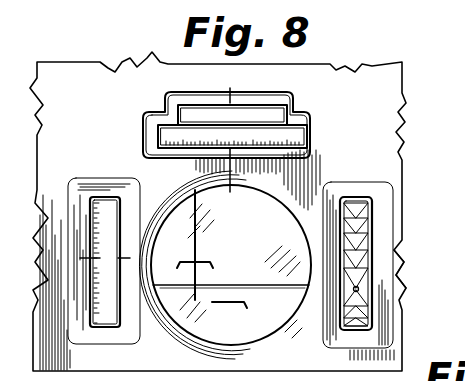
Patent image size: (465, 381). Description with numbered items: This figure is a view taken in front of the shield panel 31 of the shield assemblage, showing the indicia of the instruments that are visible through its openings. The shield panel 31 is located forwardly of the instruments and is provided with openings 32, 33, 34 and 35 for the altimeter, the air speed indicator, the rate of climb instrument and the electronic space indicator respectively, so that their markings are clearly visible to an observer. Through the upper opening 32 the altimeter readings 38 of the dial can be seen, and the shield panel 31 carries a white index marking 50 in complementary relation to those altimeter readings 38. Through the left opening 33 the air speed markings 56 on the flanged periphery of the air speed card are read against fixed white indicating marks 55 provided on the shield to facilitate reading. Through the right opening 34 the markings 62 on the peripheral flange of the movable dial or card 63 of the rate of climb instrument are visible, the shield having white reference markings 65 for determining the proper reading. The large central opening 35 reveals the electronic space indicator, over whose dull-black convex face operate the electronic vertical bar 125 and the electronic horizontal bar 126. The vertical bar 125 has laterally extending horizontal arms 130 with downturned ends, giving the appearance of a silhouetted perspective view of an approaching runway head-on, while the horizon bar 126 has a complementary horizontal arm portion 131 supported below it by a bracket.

The shield panel 31 is at (405, 84).
The opening 32 is at (263, 103).
The altimeter readings 38 is at (258, 133).
The white index marking 50 is at (211, 170).
The opening 35 is at (281, 205).
The electronic vertical bar 125 is at (199, 241).
The electronic horizontal bar 126 is at (262, 287).
The horizontal arms 130 is at (213, 262).
The horizontal arm portion 131 is at (237, 305).
The opening 33 is at (94, 263).
The fixed white indicating marks 55 is at (130, 258).
The air speed markings 56 is at (113, 320).
The opening 34 is at (381, 265).
The markings 62 is at (378, 304).
The movable dial or card 63 is at (360, 289).
The white reference markings 65 is at (400, 274).